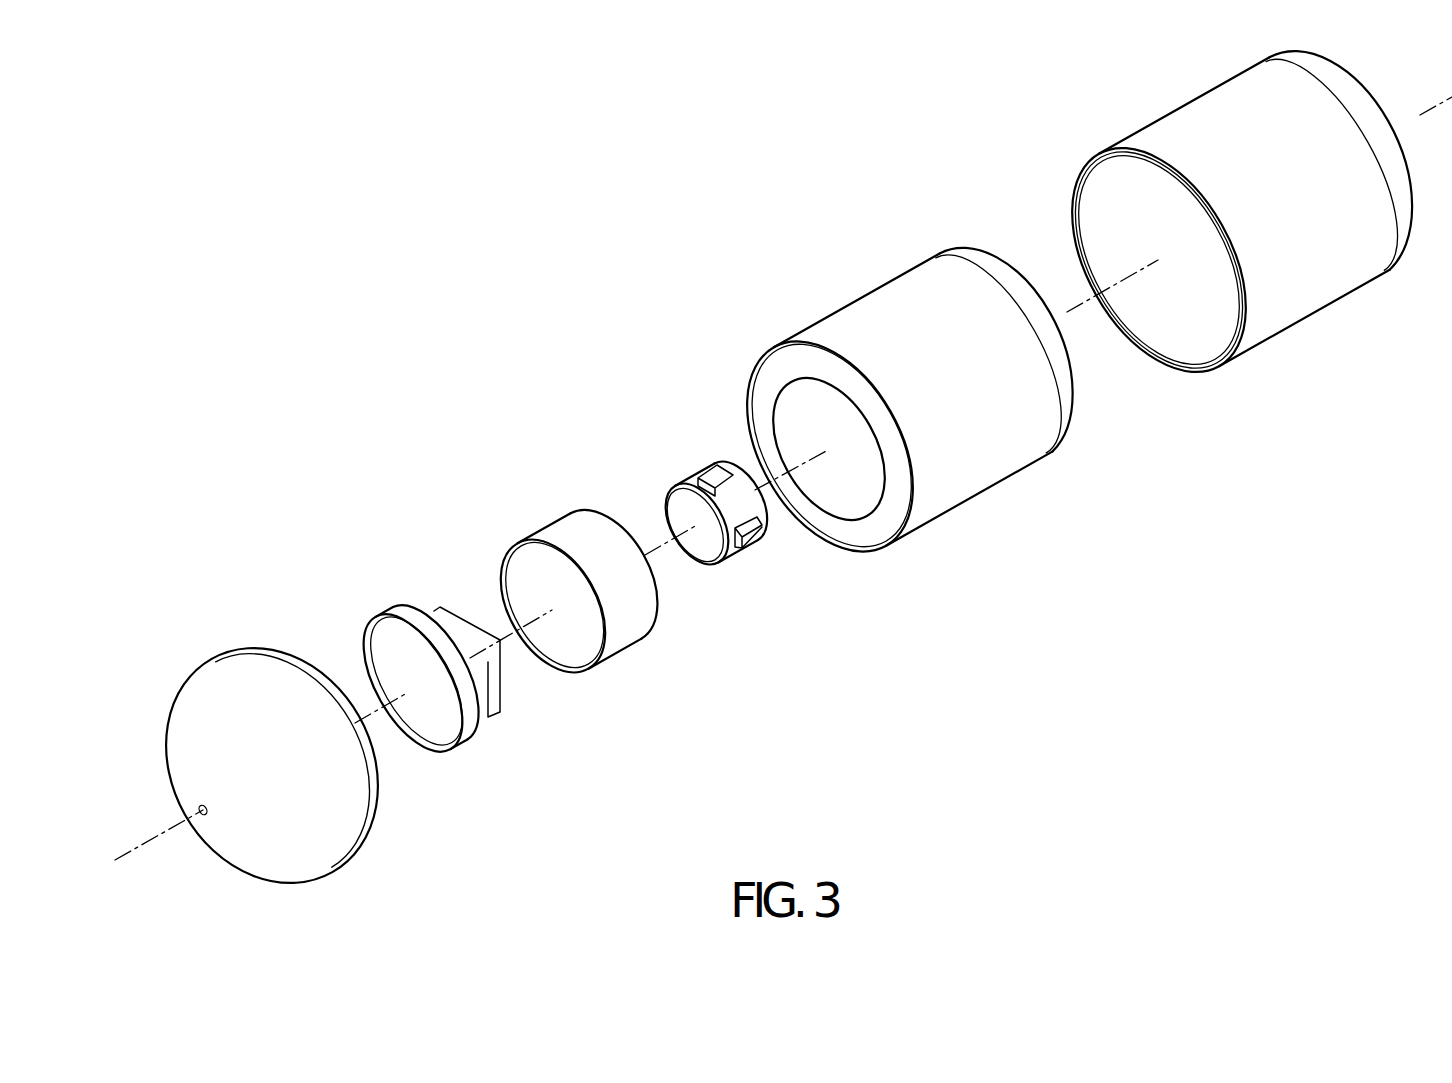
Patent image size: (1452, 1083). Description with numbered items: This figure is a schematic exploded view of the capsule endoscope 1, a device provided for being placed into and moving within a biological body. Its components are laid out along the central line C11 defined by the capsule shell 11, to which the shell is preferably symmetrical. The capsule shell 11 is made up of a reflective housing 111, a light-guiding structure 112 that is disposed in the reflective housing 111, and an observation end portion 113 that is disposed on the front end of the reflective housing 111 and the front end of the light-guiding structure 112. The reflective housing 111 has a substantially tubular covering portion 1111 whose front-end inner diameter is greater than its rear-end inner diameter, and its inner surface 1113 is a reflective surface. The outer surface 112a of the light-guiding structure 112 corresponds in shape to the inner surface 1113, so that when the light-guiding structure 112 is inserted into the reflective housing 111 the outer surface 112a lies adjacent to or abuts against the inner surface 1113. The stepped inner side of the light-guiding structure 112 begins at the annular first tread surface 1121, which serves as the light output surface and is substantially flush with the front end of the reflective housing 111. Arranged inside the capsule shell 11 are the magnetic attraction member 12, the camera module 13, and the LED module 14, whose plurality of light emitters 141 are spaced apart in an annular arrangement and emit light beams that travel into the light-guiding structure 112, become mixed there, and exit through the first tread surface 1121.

The capsule endoscope 1 is at (222, 508).
The capsule shell 11 is at (205, 65).
The reflective housing 111 is at (1189, 98).
The covering portion 1111 is at (1305, 298).
The inner surface 1113 is at (1190, 340).
The light-guiding structure 112 is at (864, 292).
The outer surface 112a is at (995, 465).
The first tread surface 1121 is at (840, 538).
The observation end portion 113 is at (197, 663).
The central line C11 is at (122, 858).
The magnetic attraction member 12 is at (546, 520).
The camera module 13 is at (402, 603).
The LED module 14 is at (684, 470).
The light emitters 141 is at (722, 468).